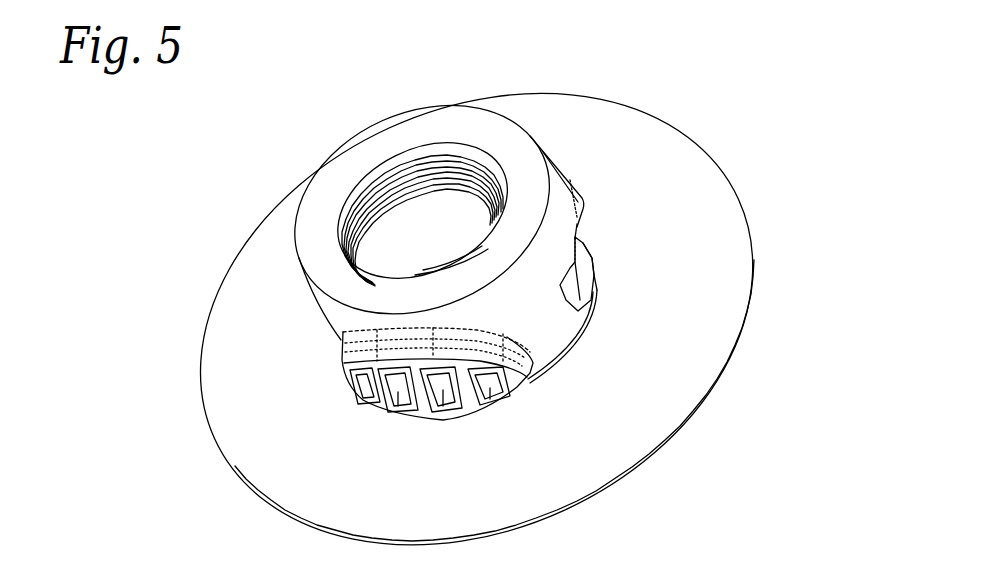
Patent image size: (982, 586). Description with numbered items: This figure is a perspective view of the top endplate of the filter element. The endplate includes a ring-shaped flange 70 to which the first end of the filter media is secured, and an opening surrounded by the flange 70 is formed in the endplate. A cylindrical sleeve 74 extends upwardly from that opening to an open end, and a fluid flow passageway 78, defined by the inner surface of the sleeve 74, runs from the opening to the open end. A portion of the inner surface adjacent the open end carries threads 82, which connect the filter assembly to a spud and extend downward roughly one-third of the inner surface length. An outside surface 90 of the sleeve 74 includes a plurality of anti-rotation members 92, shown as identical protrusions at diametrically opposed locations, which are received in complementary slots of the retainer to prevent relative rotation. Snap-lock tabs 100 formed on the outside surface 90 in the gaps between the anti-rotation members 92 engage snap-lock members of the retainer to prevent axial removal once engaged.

The ring-shaped flange 70 is at (630, 437).
The cylindrical sleeve 74 is at (317, 327).
The fluid flow passageway 78 is at (437, 222).
The threads 82 is at (384, 182).
The outside surface 90 is at (535, 278).
The anti-rotation members 92 is at (575, 137).
The snap-lock tabs 100 is at (592, 262).